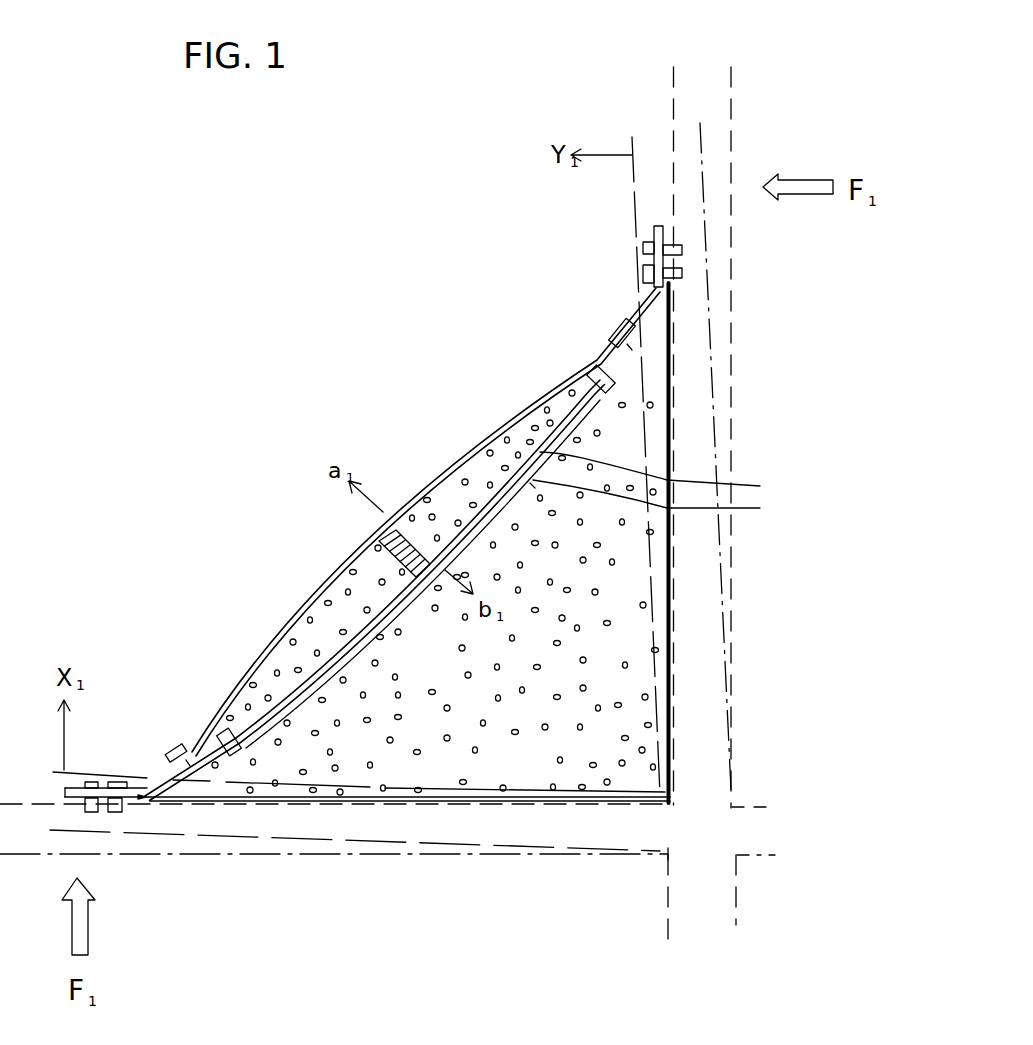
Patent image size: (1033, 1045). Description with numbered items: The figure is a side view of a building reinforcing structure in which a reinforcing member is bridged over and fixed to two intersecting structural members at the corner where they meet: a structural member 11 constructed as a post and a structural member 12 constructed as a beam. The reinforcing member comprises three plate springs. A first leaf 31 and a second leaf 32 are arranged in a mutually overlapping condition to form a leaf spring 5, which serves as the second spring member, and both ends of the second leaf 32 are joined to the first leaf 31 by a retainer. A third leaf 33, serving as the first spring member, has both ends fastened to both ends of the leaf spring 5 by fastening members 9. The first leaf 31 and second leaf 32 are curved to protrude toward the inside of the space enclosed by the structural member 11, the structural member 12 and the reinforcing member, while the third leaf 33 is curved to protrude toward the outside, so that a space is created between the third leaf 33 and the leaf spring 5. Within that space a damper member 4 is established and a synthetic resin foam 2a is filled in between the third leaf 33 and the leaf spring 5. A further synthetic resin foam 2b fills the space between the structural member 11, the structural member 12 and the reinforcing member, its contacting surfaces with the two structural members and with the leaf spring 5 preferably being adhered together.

The structural member 11 is at (716, 68).
The structural member 12 is at (121, 853).
The synthetic resin foam 2a is at (518, 438).
The synthetic resin foam 2b is at (637, 415).
The first leaf 31 is at (664, 475).
The second leaf 32 is at (795, 477).
The leaf spring 5 is at (684, 487).
The third leaf 33 is at (456, 463).
The damper member 4 is at (379, 540).
The fastening member 9 is at (359, 783).